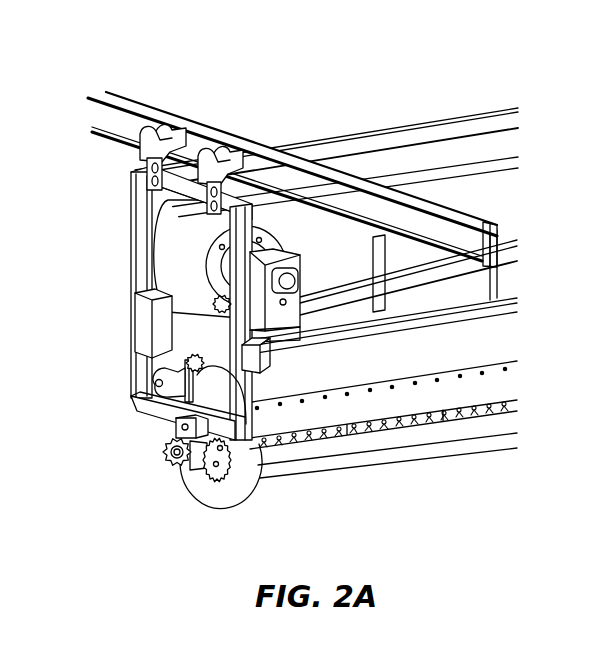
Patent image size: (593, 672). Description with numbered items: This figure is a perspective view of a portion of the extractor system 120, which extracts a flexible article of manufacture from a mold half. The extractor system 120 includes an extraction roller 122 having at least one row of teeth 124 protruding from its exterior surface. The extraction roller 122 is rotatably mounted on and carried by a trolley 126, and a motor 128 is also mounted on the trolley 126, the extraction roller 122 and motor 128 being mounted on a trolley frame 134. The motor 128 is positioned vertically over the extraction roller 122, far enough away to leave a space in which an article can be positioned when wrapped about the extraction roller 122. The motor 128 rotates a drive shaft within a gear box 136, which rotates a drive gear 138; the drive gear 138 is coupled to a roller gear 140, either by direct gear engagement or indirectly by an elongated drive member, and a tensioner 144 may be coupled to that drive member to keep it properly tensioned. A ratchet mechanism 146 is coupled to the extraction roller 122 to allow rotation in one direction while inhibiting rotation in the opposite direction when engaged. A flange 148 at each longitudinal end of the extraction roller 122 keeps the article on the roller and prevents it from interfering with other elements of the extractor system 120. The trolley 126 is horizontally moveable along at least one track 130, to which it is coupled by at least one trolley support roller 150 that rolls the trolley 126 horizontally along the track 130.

The extractor system 120 is at (278, 98).
The extraction roller 122 is at (430, 440).
The row of teeth 124 is at (484, 393).
The trolley 126 is at (386, 113).
The motor 128 is at (172, 248).
The track 130 is at (163, 112).
The trolley frame 134 is at (467, 313).
The gear box 136 is at (288, 312).
The drive gear 138 is at (196, 332).
The roller gear 140 is at (212, 495).
The tensioner 144 is at (163, 354).
The ratchet mechanism 146 is at (148, 475).
The flange 148 is at (233, 498).
The trolley support roller 150 is at (213, 170).